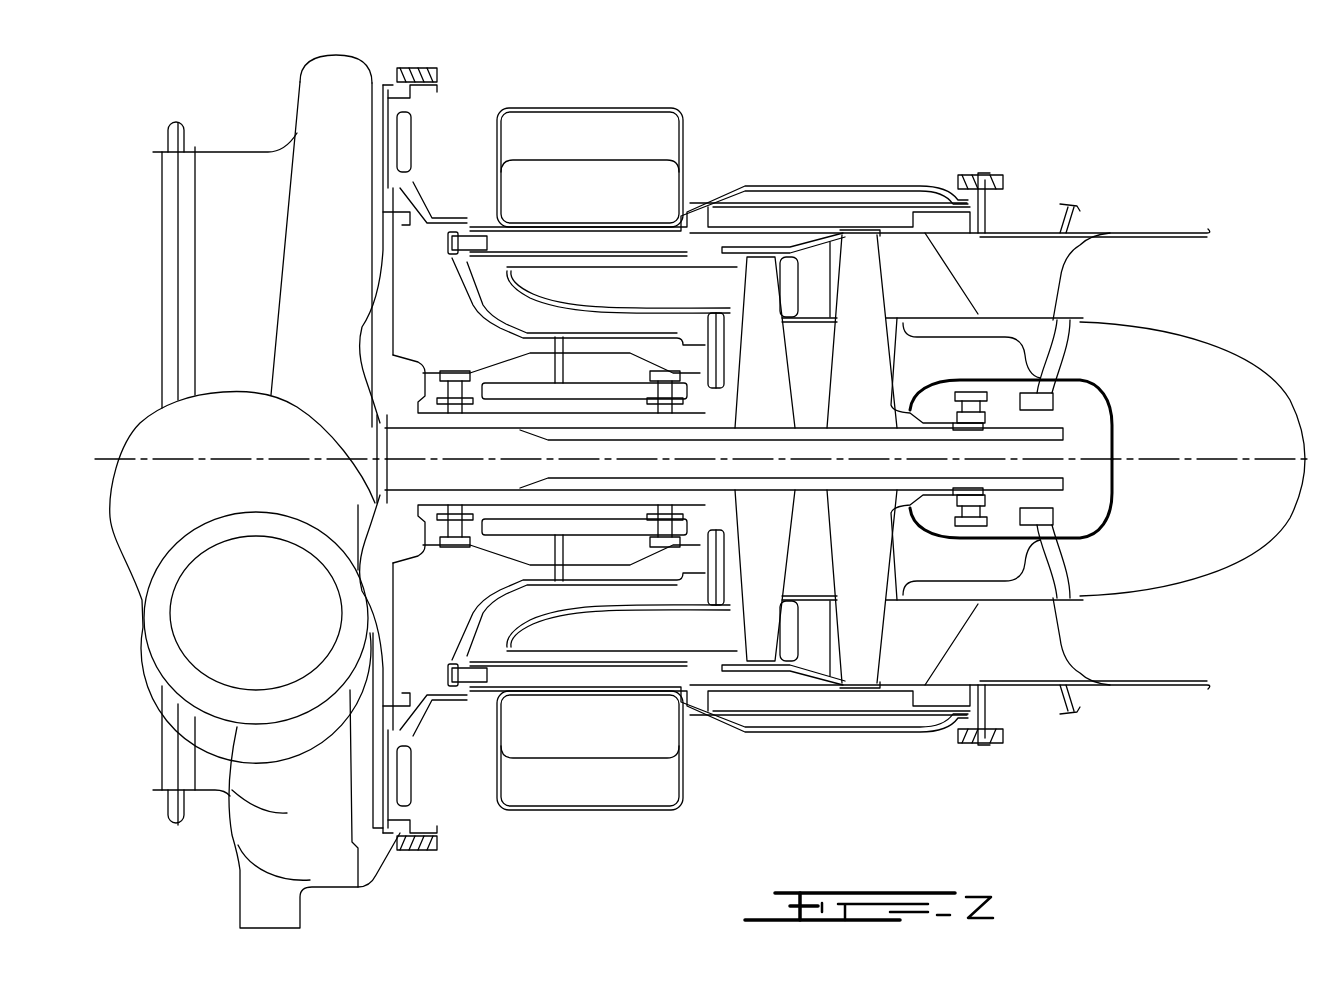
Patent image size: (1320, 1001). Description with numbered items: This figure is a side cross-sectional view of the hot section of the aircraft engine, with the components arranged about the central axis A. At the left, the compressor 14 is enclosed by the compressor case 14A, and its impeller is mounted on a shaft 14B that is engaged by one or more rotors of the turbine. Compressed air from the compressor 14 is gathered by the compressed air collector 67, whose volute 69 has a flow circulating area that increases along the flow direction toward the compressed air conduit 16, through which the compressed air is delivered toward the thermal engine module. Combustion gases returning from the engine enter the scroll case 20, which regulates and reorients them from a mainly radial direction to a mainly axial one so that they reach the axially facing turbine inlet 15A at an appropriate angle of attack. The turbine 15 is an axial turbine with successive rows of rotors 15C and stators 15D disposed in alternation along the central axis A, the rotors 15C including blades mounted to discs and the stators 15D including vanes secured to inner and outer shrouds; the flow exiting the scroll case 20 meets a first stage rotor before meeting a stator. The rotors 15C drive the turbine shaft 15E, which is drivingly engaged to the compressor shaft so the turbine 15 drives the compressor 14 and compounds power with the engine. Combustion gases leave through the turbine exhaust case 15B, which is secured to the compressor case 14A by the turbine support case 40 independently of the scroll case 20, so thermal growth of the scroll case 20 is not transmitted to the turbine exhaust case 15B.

The compressor 14 is at (237, 190).
The compressor case 14A is at (427, 205).
The shaft 14B is at (660, 427).
The turbine assembly 15 is at (930, 275).
The turbine inlet 15A is at (733, 277).
The turbine exhaust case 15B is at (1150, 215).
The rotor 15C is at (755, 628).
The stator 15D is at (808, 640).
The turbine shaft 15E is at (1050, 482).
The compressed air conduit 16 is at (143, 415).
The scroll case 20 is at (715, 125).
The turbine support case 40 is at (888, 178).
The compressed air collector 67 is at (338, 105).
The volute 69 is at (335, 170).
The central axis A is at (1263, 459).